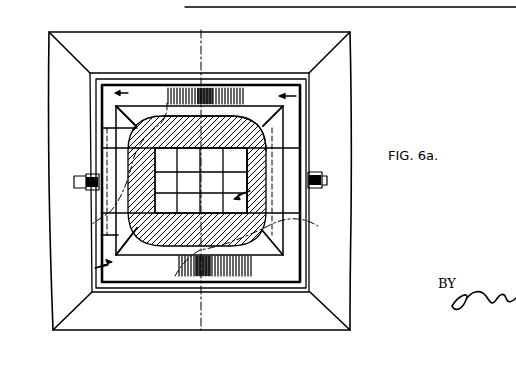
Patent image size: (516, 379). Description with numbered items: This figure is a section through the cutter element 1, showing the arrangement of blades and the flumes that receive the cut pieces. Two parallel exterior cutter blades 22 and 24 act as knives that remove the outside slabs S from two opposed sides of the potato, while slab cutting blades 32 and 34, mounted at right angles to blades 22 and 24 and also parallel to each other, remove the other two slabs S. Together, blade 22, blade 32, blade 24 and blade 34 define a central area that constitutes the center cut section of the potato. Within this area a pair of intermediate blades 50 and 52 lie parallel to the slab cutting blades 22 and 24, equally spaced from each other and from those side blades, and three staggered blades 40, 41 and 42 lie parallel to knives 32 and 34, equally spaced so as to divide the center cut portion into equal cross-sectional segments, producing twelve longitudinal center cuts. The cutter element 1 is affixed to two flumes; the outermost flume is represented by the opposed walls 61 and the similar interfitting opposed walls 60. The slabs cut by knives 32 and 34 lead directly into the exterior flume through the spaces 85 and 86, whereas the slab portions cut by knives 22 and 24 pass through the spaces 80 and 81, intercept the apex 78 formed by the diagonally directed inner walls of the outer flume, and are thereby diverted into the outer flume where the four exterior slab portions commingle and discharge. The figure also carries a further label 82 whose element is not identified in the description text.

The cutter element 1 is at (250, 79).
The cutter blade 22 is at (272, 141).
The cutter blade 24 is at (272, 232).
The cutter blade 32 is at (135, 193).
The cutter blade 34 is at (243, 174).
The blade 40 is at (172, 174).
The blade 41 is at (231, 124).
The blade 42 is at (228, 160).
The intermediate blade 50 is at (172, 174).
The intermediate blade 52 is at (180, 226).
The opposed walls 60 is at (106, 46).
The opposed walls 61 is at (50, 194).
The apex 78 is at (178, 33).
The space 80 is at (223, 268).
The space 81 is at (108, 264).
The direction arrow 82 is at (250, 191).
The space 85 is at (296, 95).
The space 86 is at (100, 91).
The slab S is at (167, 103).